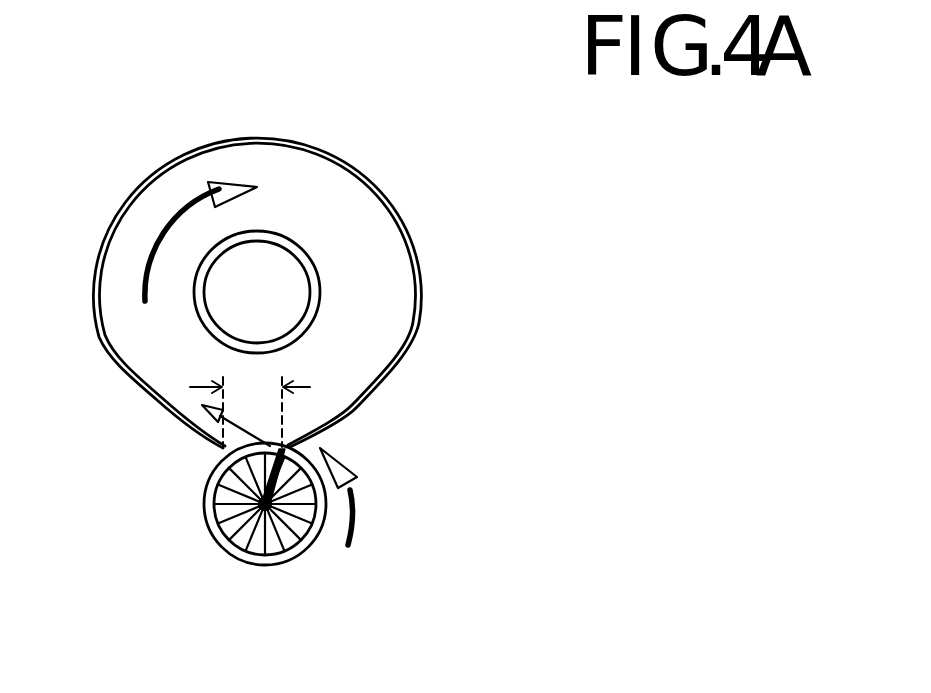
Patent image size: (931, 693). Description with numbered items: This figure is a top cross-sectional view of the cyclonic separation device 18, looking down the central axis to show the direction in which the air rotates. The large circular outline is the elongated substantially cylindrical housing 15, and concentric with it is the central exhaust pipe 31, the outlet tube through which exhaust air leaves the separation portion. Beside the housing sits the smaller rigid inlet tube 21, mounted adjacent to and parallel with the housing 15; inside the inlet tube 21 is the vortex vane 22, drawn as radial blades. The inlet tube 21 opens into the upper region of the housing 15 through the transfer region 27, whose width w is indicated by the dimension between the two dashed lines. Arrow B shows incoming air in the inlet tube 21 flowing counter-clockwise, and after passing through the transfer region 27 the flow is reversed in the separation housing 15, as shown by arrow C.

The cylindrical housing 15 is at (377, 183).
The cyclonic separation device 18 is at (480, 278).
The central exhaust pipe 31 is at (316, 314).
The inlet tube 21 is at (288, 563).
The vortex vane 22 is at (300, 528).
The transfer region 27 is at (217, 452).